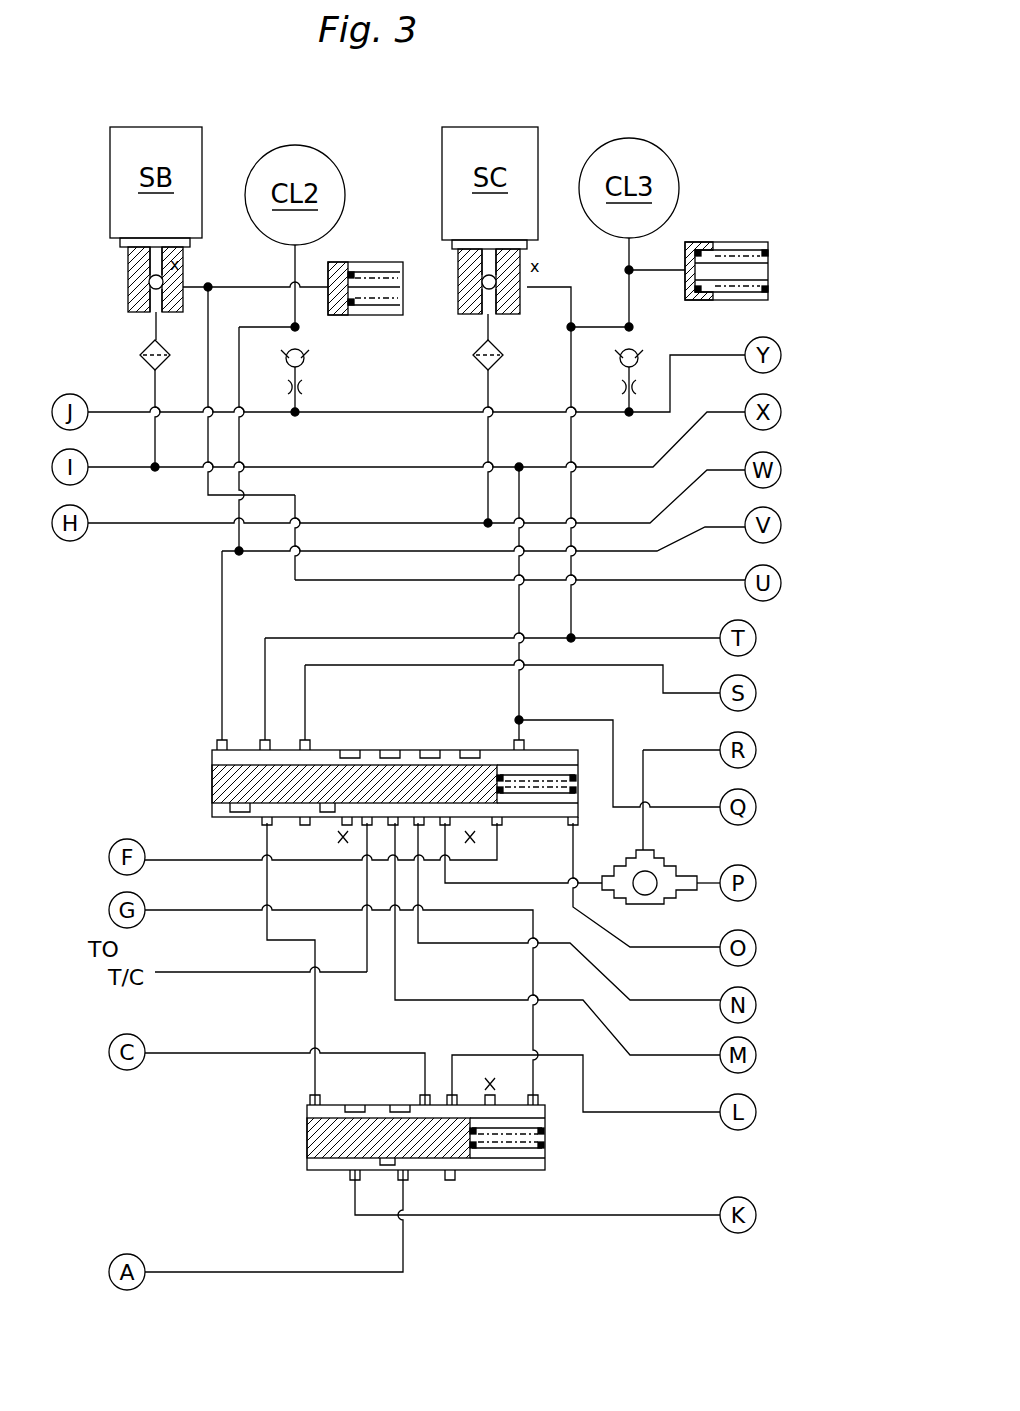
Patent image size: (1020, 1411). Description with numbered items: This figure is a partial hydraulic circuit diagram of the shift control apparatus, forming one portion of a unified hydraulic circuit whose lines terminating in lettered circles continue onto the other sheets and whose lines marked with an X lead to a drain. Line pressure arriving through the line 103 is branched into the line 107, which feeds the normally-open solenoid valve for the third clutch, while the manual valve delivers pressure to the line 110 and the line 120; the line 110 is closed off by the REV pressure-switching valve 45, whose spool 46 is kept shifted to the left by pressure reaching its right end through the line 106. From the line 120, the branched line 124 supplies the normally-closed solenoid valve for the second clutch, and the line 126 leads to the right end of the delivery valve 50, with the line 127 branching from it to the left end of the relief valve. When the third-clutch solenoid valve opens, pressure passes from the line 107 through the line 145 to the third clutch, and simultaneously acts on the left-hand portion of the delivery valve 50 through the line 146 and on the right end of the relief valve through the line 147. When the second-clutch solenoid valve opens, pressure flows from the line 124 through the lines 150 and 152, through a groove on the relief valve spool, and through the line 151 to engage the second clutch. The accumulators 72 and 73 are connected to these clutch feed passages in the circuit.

The REV pressure-switching valve 45 is at (556, 1148).
The spool 46 is at (452, 1180).
The delivery valve 50 is at (198, 777).
The accumulator 72 is at (362, 262).
The accumulator 73 is at (735, 242).
The line 103 is at (340, 523).
The line 106 is at (184, 912).
The line 107 is at (490, 440).
The line 110 is at (632, 1112).
The line 120 is at (336, 467).
The line 124 is at (150, 395).
The line 126 is at (510, 705).
The line 127 is at (578, 716).
The line 145 is at (553, 290).
The line 146 is at (418, 638).
The line 147 is at (600, 638).
The line 150 is at (211, 345).
The line 151 is at (682, 538).
The line 152 is at (316, 582).